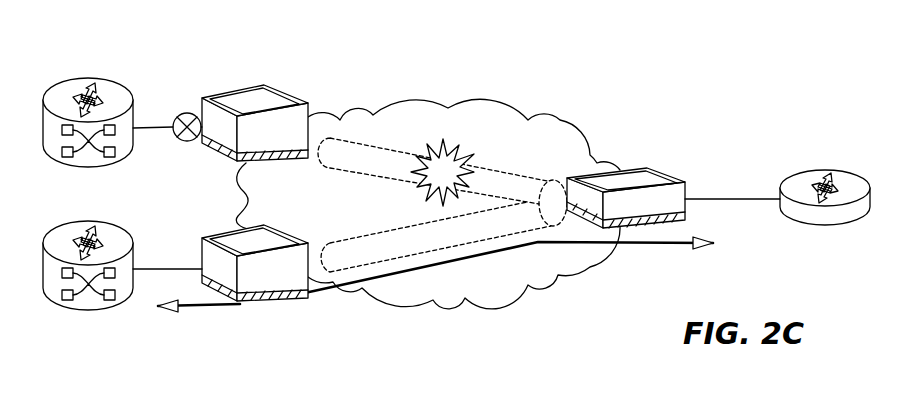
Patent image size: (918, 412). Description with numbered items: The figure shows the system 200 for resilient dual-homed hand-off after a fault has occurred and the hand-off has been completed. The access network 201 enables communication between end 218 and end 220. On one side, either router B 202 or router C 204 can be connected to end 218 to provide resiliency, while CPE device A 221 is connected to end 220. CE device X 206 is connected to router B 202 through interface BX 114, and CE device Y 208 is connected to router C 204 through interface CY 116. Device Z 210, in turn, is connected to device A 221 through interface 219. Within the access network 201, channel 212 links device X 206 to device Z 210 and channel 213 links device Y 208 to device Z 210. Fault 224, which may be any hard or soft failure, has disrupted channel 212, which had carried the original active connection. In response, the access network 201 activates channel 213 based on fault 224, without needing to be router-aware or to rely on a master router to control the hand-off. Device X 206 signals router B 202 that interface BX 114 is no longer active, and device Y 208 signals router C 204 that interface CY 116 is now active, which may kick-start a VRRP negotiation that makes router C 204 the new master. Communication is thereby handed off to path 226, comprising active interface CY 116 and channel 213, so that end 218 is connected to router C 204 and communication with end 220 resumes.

The system 200 is at (665, 67).
The access network 201 is at (473, 103).
The router B 202 is at (100, 168).
The router C 204 is at (100, 312).
The CE device X 206 is at (283, 85).
The CE device Y 208 is at (257, 227).
The device Z 210 is at (638, 168).
The channel 212 is at (385, 177).
The channel 213 is at (420, 225).
The end 218 is at (171, 315).
The interface 219 is at (738, 197).
The end 220 is at (702, 250).
The CPE device A 221 is at (807, 225).
The fault 224 is at (467, 152).
The path 226 is at (457, 260).
The interface BX 114 is at (150, 134).
The interface CY 116 is at (165, 265).